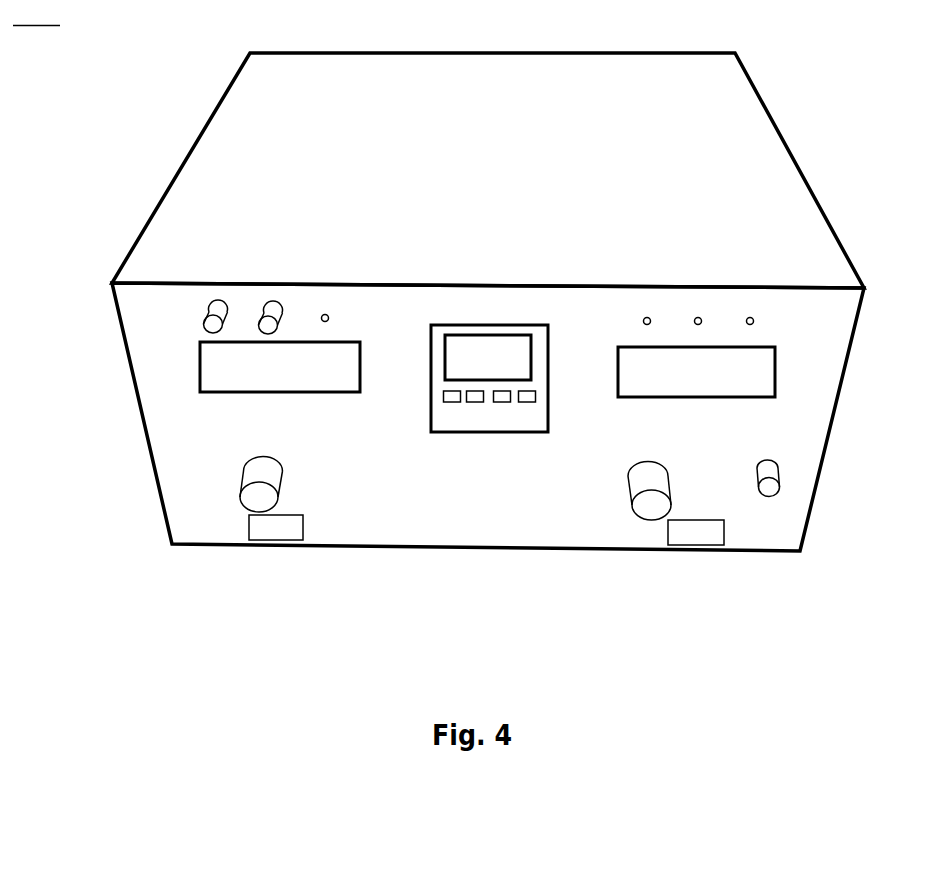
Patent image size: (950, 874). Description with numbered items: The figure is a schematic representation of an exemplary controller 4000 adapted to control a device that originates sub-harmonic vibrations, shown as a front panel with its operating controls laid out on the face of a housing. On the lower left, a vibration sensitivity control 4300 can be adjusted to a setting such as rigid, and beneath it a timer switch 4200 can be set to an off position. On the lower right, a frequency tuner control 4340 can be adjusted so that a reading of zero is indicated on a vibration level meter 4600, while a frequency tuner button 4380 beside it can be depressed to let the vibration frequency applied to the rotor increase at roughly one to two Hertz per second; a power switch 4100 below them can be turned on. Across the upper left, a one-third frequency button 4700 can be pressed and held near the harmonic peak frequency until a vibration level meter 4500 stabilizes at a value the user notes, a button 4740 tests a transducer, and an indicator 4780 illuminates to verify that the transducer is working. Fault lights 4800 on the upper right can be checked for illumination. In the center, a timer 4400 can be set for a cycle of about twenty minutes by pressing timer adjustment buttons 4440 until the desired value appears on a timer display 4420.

The controller 4000 is at (438, 277).
The power switch 4100 is at (720, 532).
The timer switch 4200 is at (301, 527).
The vibration sensitivity control 4300 is at (263, 471).
The frequency tuner control 4340 is at (652, 479).
The frequency tuner button 4380 is at (765, 466).
The timer 4400 is at (489, 367).
The timer display 4420 is at (488, 357).
The timer adjustment buttons 4440 is at (526, 405).
The vibration level meter 4500 is at (280, 367).
The vibration level meter 4600 is at (696, 372).
The one-third frequency button 4700 is at (214, 305).
The button 4740 is at (273, 305).
The indicator 4780 is at (325, 312).
The fault lights 4800 is at (746, 316).